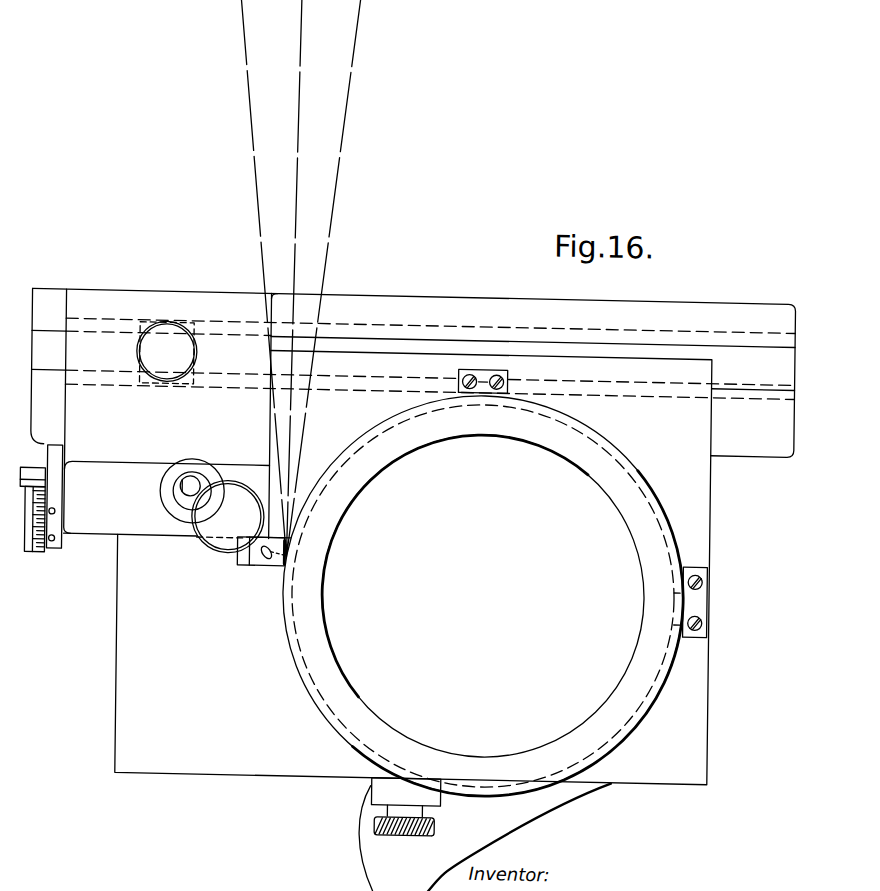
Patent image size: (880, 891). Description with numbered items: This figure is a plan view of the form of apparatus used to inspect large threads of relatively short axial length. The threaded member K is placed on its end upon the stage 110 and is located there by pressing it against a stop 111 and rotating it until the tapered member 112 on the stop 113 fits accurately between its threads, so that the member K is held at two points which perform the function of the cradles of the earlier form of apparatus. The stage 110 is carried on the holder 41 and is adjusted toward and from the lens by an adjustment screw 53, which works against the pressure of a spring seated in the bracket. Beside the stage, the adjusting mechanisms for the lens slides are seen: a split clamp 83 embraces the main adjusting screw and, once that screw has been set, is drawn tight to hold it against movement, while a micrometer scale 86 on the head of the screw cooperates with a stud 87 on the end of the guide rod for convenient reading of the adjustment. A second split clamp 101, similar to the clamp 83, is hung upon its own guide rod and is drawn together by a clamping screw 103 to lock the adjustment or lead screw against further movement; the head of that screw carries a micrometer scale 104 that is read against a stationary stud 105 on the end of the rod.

The threaded member K is at (510, 428).
The stage 110 is at (117, 729).
The stop 111 is at (480, 370).
The tapered member 112 is at (678, 603).
The stop 113 is at (700, 601).
The split clamp 83 is at (220, 469).
The stud 87 is at (197, 482).
The micrometer scale 86 is at (206, 556).
The split clamp 101 is at (52, 463).
The stationary stud 105 is at (21, 476).
The micrometer scale 104 is at (29, 563).
The clamping screw 103 is at (56, 549).
The adjustment screw 53 is at (440, 830).
The holder 41 is at (362, 862).